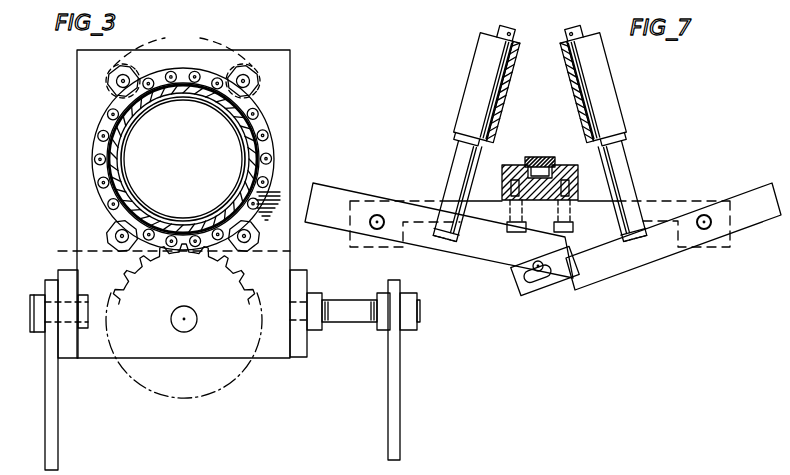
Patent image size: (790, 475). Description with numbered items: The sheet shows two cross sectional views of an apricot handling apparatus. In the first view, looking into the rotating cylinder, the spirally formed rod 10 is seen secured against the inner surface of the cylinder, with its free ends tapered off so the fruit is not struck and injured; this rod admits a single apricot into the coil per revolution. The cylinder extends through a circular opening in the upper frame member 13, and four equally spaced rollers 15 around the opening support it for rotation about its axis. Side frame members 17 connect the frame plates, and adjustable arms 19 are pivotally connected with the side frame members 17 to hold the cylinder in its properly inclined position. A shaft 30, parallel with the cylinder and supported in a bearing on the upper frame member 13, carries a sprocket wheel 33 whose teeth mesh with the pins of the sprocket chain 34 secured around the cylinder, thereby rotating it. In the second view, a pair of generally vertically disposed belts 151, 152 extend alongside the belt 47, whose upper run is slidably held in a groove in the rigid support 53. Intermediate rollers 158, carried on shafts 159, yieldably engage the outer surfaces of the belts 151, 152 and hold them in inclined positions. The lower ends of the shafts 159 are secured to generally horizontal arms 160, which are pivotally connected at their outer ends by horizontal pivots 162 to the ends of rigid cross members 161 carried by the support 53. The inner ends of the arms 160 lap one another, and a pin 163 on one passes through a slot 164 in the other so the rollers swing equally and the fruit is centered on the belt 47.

In FIG. 3, the spirally formed rod 10 is at (238, 128).
In FIG. 3, the upper frame member 13 is at (289, 116).
In FIG. 3, the rollers 15 is at (178, 144).
In FIG. 3, the side frame members 17 is at (307, 280).
In FIG. 3, the adjustable arms 19 is at (58, 438).
In FIG. 3, the shaft 30 is at (191, 327).
In FIG. 3, the sprocket wheel 33 is at (215, 390).
In FIG. 3, the sprocket chain 34 is at (97, 175).
In FIG. 7, the belt 47 is at (544, 157).
In FIG. 7, the rigid support 53 is at (579, 177).
In FIG. 7, the belt 151 is at (519, 61).
In FIG. 7, the belt 152 is at (572, 112).
In FIG. 7, the rollers 158 is at (481, 67).
In FIG. 7, the shafts 159 is at (459, 175).
In FIG. 7, the arms 160 is at (487, 258).
In FIG. 7, the cross members 161 is at (663, 201).
In FIG. 7, the pivots 162 is at (380, 214).
In FIG. 7, the pin 163 is at (536, 291).
In FIG. 7, the slot 164 is at (548, 272).